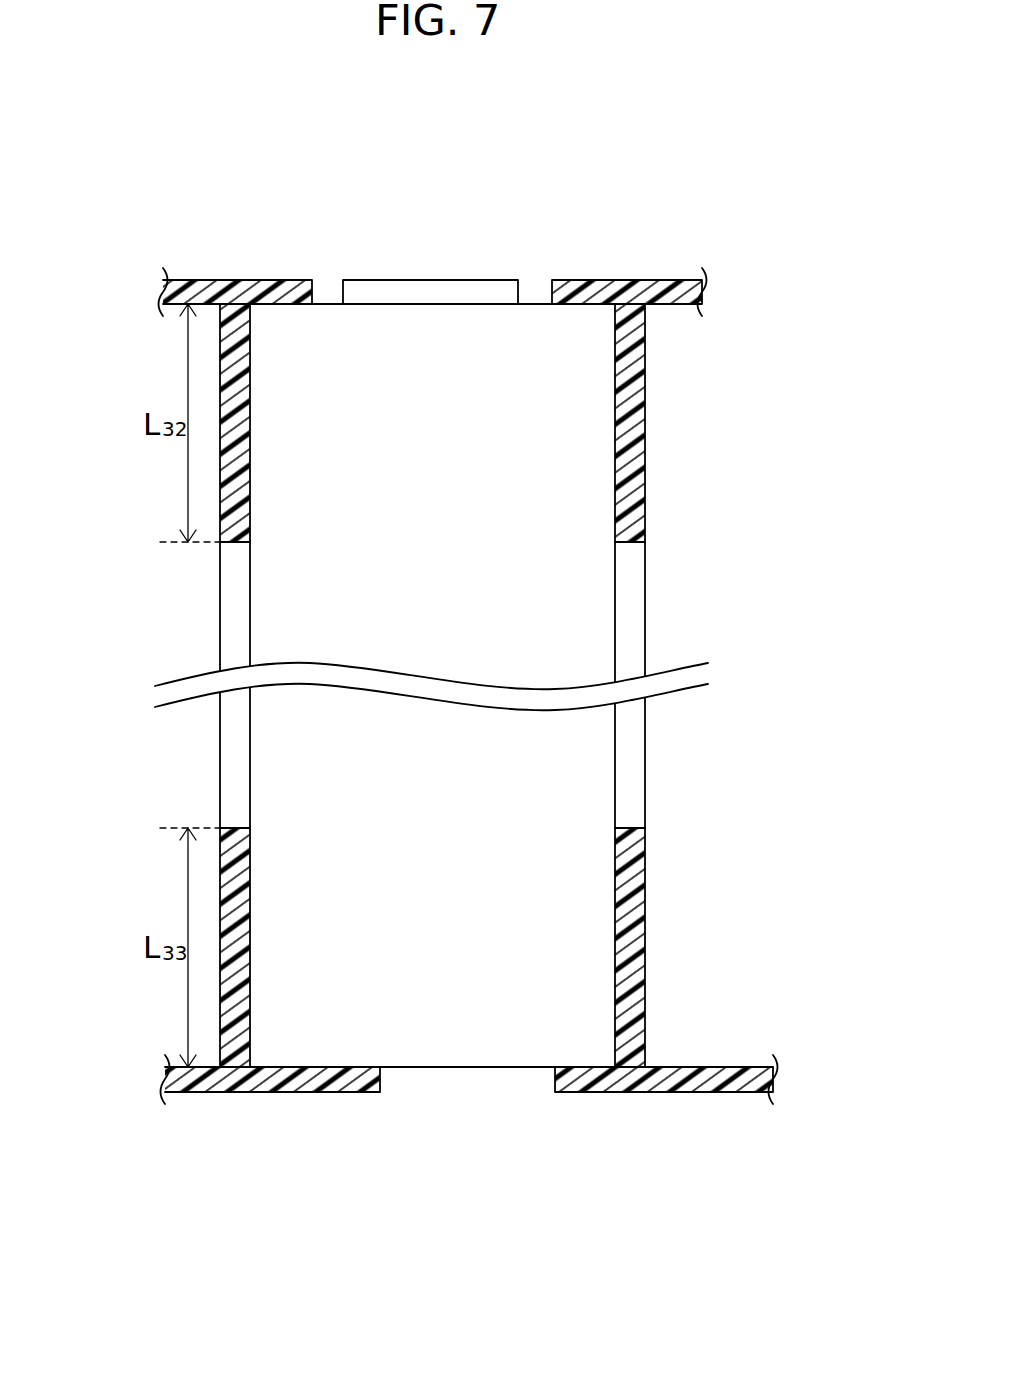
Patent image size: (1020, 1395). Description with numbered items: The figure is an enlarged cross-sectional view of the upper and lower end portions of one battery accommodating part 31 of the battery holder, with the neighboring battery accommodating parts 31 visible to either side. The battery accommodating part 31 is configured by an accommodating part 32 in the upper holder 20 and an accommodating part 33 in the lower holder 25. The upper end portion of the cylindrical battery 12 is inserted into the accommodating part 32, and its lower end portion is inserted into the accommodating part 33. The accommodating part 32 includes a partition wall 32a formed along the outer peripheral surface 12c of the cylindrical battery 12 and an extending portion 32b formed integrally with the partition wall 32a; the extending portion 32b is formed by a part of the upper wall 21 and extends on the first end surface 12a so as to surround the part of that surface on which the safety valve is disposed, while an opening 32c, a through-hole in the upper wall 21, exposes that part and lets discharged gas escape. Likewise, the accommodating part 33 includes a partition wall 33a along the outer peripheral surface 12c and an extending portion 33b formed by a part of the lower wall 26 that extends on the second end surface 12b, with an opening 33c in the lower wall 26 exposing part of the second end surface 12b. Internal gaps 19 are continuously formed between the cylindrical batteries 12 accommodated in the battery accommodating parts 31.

The cylindrical battery 12 is at (486, 691).
The first end surface 12a is at (425, 280).
The second end surface 12b is at (472, 1067).
The outer peripheral surface 12c is at (615, 742).
The internal gap 19 is at (235, 758).
The upper holder 20 is at (666, 273).
The upper wall 21 is at (590, 292).
The lower holder 25 is at (189, 1103).
The lower wall 26 is at (625, 1092).
The battery accommodating part 31 is at (113, 623).
The accommodating part 32 is at (260, 321).
The partition wall 32a is at (250, 353).
The extending portion 32b is at (200, 280).
The opening 32c is at (304, 229).
The accommodating part 33 is at (278, 1056).
The partition wall 33a is at (228, 1092).
The extending portion 33b is at (250, 990).
The opening 33c is at (381, 1067).